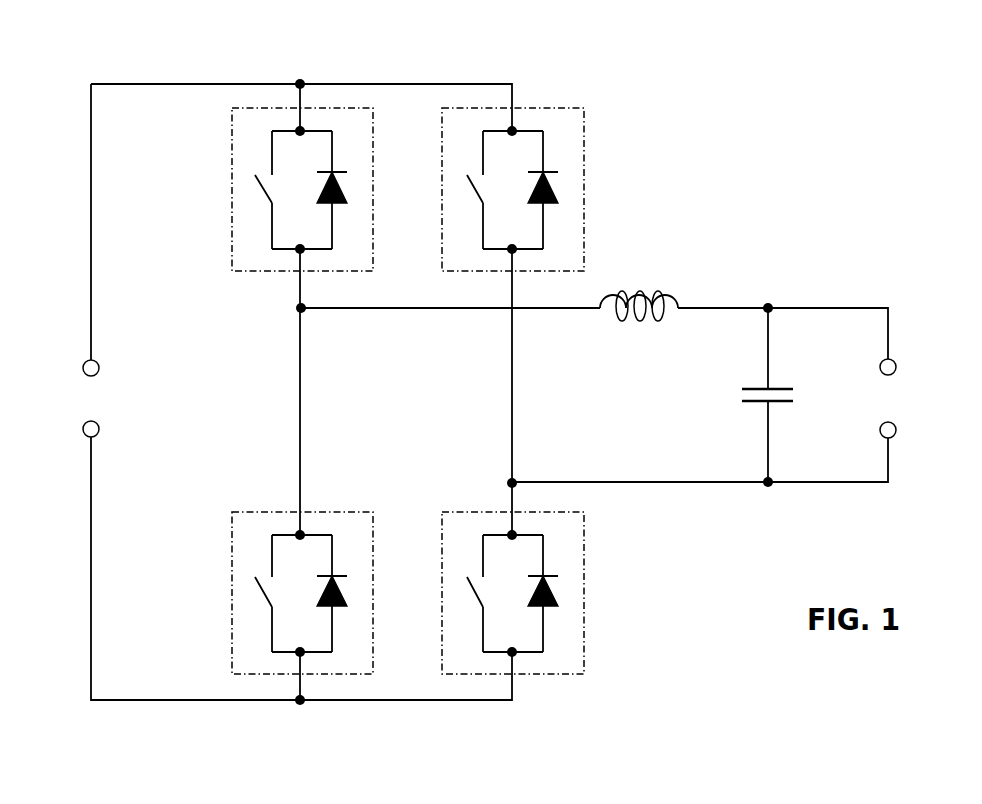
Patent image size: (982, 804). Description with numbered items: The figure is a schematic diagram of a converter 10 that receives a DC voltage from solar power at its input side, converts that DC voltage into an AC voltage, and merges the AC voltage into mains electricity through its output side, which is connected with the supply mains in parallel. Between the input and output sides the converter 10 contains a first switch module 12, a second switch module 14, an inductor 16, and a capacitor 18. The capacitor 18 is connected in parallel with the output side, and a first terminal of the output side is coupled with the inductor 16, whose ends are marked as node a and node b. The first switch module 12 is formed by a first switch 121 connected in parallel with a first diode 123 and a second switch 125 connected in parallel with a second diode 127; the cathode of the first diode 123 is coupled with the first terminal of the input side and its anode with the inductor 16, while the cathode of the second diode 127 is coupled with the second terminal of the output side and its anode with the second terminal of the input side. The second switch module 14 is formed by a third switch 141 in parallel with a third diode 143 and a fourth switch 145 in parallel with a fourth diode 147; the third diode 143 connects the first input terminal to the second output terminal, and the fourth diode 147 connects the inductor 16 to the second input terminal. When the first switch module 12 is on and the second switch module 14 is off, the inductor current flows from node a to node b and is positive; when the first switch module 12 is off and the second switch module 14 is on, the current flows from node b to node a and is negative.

The converter 10 is at (814, 92).
The first switch module 12 is at (465, 511).
The second switch module 14 is at (542, 271).
The inductor 16 is at (648, 290).
The capacitor 18 is at (742, 396).
The first switch 121 is at (255, 190).
The first diode 123 is at (347, 187).
The second switch 125 is at (463, 592).
The second diode 127 is at (558, 588).
The third switch 141 is at (463, 190).
The third diode 143 is at (558, 186).
The fourth switch 145 is at (255, 595).
The fourth diode 147 is at (347, 590).